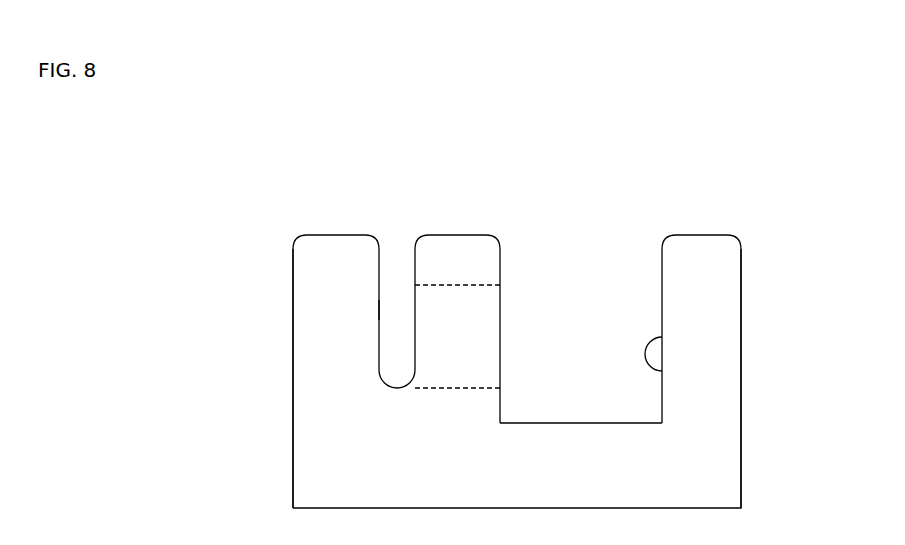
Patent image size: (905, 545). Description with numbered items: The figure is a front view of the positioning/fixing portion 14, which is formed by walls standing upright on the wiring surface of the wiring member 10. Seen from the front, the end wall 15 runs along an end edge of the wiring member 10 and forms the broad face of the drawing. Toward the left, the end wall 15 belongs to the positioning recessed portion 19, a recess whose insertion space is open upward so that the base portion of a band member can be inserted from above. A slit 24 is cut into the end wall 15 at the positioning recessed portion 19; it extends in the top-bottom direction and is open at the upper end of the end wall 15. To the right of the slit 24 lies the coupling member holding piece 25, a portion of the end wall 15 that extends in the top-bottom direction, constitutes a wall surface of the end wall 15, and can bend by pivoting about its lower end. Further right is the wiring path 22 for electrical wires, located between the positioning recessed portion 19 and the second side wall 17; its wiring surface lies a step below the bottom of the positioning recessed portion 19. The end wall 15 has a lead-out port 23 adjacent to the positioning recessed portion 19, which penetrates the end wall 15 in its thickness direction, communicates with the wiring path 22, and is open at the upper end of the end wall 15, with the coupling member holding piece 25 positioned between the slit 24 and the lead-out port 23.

The wiring member 10 is at (699, 234).
The positioning/fixing portion 14 is at (550, 157).
The end wall 15 is at (342, 270).
The second side wall 17 is at (727, 303).
The positioning recessed portion 19 is at (405, 240).
The wiring path 22 is at (590, 325).
The lead-out port 23 is at (663, 371).
The slit 24 is at (380, 310).
The coupling member holding piece 25 is at (463, 238).